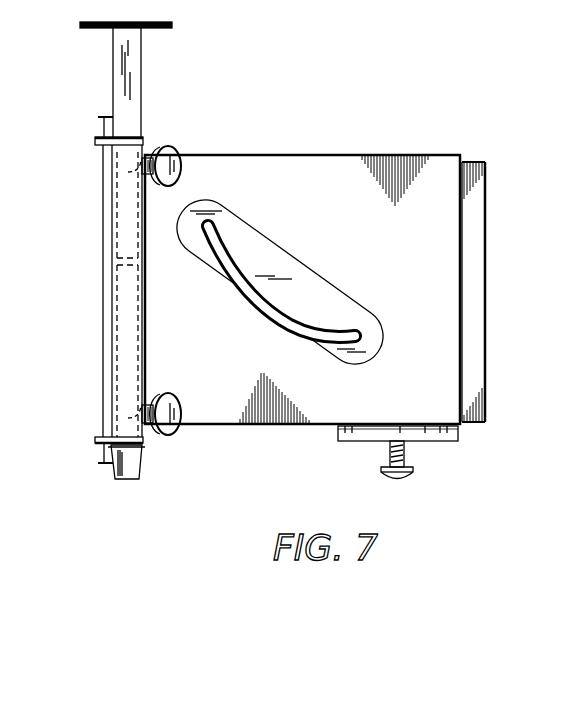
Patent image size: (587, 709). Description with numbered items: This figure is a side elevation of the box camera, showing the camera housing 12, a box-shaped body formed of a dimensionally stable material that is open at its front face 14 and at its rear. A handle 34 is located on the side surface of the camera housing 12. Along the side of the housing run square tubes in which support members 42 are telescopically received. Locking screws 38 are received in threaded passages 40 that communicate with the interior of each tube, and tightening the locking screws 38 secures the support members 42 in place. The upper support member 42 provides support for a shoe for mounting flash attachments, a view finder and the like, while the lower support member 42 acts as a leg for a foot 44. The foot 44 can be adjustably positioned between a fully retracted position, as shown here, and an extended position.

The camera housing 12 is at (352, 227).
The front face 14 is at (486, 196).
The handle 34 is at (356, 326).
The locking screw 38 is at (171, 147).
The threaded passage 40 is at (140, 167).
The support member 42 is at (113, 246).
The foot 44 is at (127, 479).